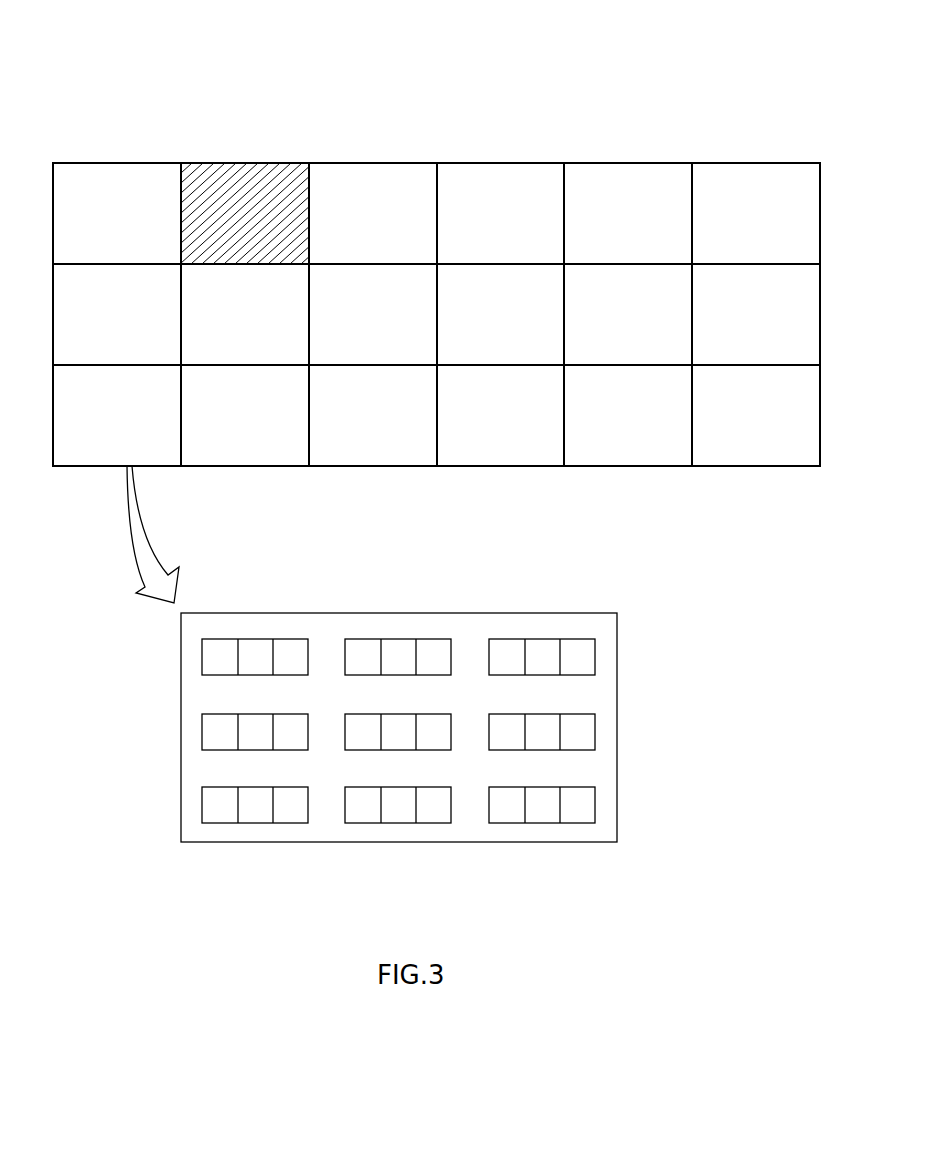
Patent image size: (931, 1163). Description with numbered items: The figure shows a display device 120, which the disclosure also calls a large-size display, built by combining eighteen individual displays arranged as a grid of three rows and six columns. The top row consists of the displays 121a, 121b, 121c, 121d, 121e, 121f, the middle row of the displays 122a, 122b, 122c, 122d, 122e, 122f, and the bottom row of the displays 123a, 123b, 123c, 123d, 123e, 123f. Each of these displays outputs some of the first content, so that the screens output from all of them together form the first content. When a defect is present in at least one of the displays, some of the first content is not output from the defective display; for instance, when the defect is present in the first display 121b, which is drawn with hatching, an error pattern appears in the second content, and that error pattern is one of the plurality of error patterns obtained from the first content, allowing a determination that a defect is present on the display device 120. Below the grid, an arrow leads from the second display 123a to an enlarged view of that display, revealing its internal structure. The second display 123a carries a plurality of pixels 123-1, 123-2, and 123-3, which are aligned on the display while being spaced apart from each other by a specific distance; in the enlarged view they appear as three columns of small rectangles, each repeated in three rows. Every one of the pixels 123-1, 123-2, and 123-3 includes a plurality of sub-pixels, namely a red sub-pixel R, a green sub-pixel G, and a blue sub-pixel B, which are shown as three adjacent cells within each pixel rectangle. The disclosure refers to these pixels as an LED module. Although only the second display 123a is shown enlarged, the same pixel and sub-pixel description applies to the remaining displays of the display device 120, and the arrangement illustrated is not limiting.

The display device 120 is at (441, 66).
The display 121a is at (117, 213).
The first display 121b is at (241, 213).
The display 121c is at (373, 213).
The display 121d is at (500, 213).
The display 121e is at (628, 213).
The display 121f is at (756, 213).
The display 122a is at (117, 314).
The display 122b is at (245, 314).
The display 122c is at (373, 314).
The display 122d is at (500, 314).
The display 122e is at (628, 314).
The display 122f is at (756, 314).
The second display 123a is at (660, 680).
The display 123b is at (245, 415).
The display 123c is at (373, 415).
The display 123d is at (500, 415).
The display 123e is at (628, 415).
The display 123f is at (756, 415).
The pixel 123-1 is at (254, 638).
The pixel 123-2 is at (397, 638).
The pixel 123-3 is at (541, 638).